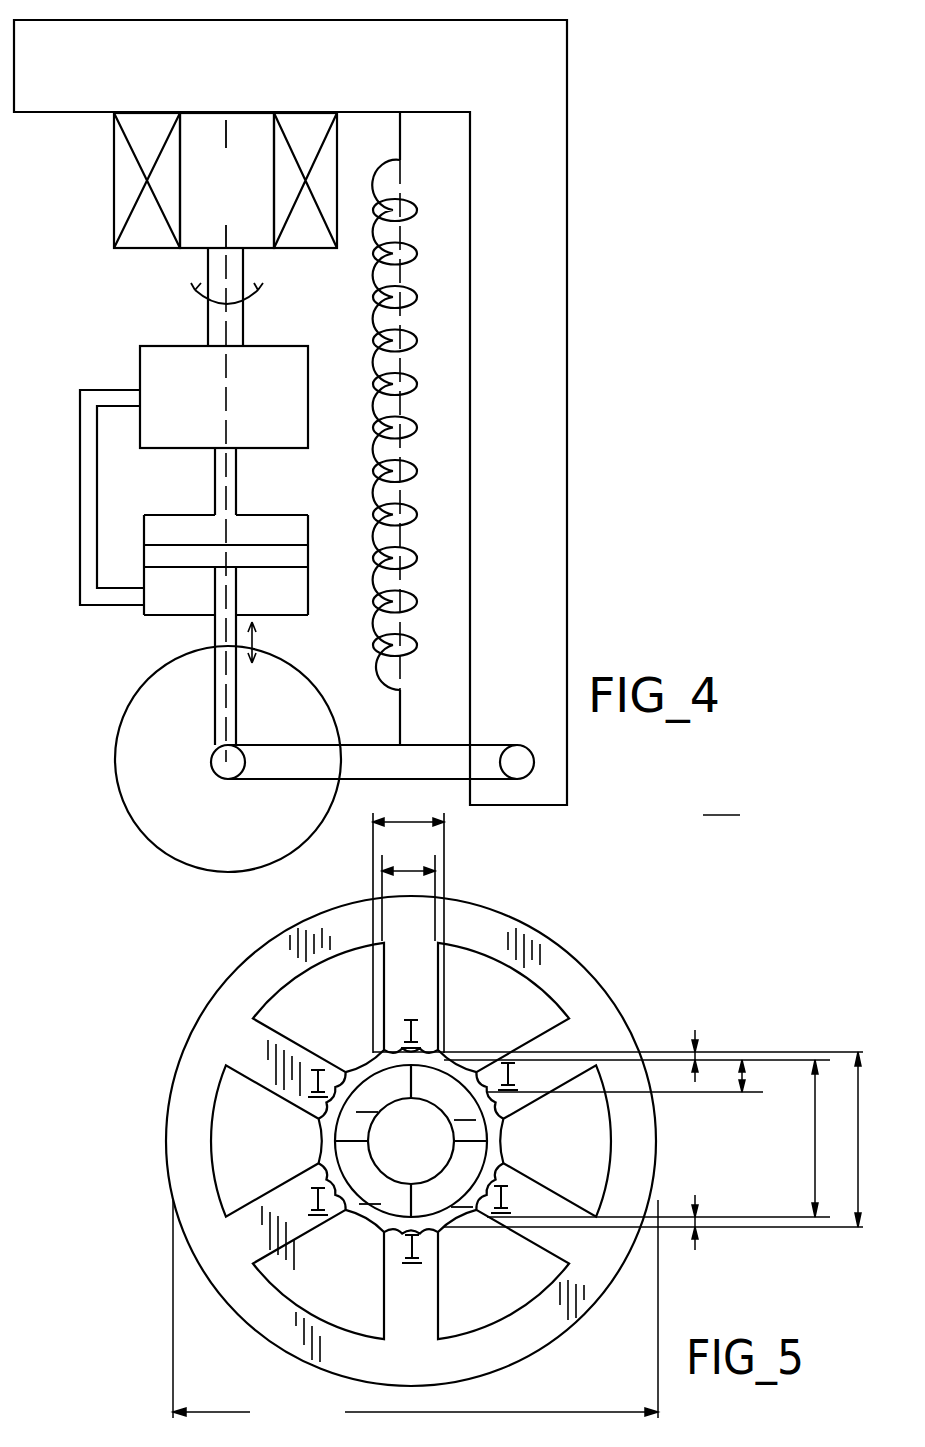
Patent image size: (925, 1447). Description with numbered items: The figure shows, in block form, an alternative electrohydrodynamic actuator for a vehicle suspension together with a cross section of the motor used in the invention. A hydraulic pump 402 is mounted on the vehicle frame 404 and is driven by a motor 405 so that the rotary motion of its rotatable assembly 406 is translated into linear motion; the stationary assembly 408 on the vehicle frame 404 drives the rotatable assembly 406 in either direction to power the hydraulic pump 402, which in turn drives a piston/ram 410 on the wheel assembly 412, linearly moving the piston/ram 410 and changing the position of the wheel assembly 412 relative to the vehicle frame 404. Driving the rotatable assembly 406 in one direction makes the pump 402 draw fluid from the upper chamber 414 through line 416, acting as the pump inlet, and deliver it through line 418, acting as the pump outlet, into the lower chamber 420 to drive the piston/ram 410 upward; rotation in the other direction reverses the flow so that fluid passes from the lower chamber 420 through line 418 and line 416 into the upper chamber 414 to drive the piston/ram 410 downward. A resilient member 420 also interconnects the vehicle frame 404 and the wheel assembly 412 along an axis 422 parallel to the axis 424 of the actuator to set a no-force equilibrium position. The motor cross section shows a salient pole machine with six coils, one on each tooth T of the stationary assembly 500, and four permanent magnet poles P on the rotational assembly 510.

In FIG. 4, the hydraulic pump 402 is at (138, 362).
In FIG. 4, the vehicle frame 404 is at (542, 73).
In FIG. 4, the motor 405 is at (337, 172).
In FIG. 4, the rotatable assembly 406 is at (246, 197).
In FIG. 4, the stationary assembly 408 is at (127, 183).
In FIG. 4, the piston/ram 410 is at (215, 630).
In FIG. 4, the wheel assembly 412 is at (108, 773).
In FIG. 4, the upper chamber 414 is at (188, 527).
In FIG. 4, the line 416 is at (238, 488).
In FIG. 4, the line 418 is at (78, 490).
In FIG. 4, the lower chamber 420 is at (370, 286).
In FIG. 4, the axis 422 is at (405, 358).
In FIG. 4, the axis 424 is at (226, 706).
In FIG. 5, the stationary assembly 500 is at (187, 1050).
In FIG. 5, the rotational assembly 510 is at (439, 1145).